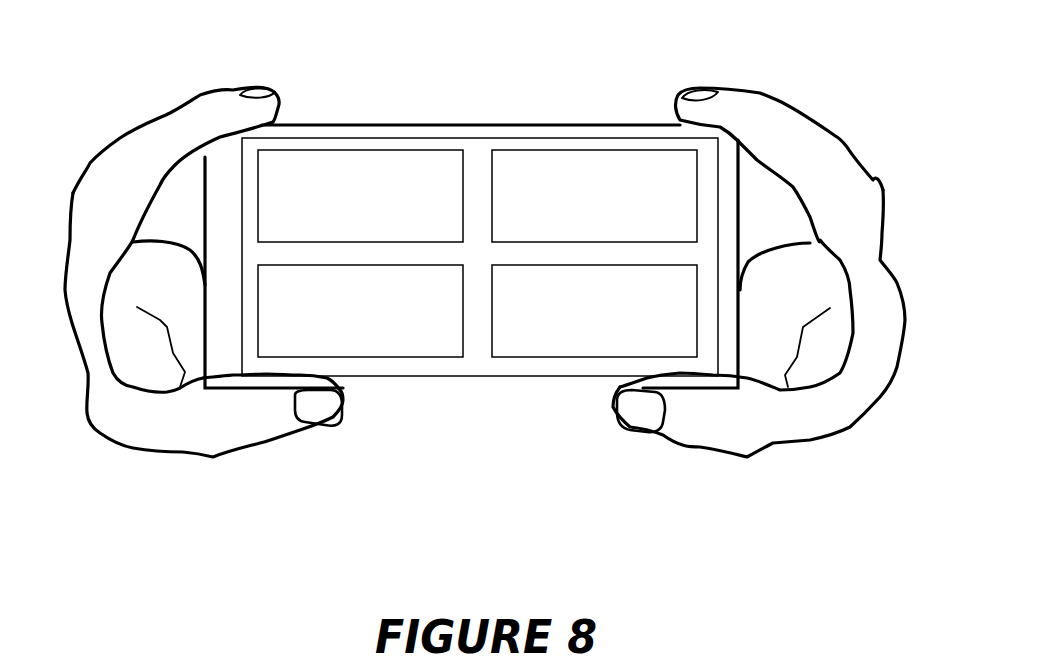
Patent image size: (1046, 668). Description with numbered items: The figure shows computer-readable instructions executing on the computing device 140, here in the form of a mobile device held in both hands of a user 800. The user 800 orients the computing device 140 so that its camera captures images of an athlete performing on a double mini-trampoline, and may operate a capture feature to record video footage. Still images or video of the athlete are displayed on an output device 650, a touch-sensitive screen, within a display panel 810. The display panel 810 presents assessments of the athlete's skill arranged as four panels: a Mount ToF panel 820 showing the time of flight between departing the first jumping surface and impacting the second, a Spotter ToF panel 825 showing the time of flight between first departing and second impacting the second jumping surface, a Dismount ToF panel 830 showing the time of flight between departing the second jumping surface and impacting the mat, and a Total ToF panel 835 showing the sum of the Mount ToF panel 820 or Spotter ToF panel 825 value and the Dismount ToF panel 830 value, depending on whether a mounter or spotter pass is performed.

The computing device 140 is at (588, 125).
The output device 650 is at (348, 131).
The user 800 is at (760, 120).
The display panel 810 is at (501, 302).
The Mount ToF panel 820 is at (277, 173).
The Spotter ToF panel 825 is at (683, 205).
The Dismount ToF panel 830 is at (272, 340).
The Total ToF panel 835 is at (512, 340).